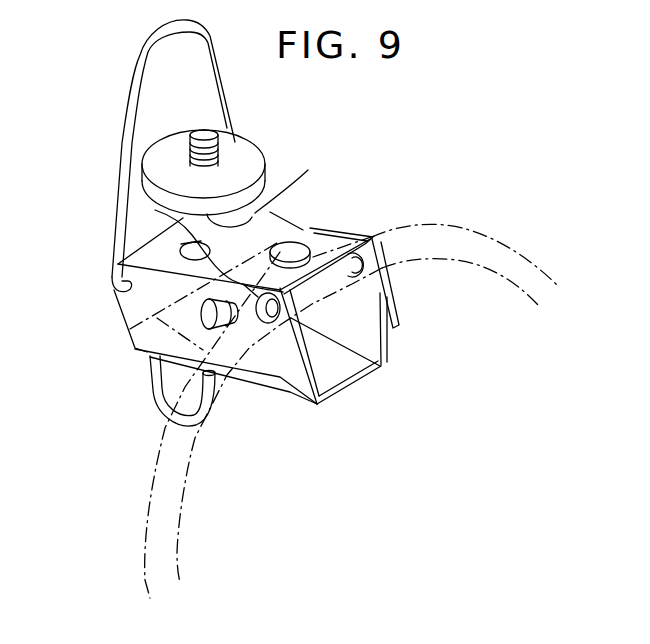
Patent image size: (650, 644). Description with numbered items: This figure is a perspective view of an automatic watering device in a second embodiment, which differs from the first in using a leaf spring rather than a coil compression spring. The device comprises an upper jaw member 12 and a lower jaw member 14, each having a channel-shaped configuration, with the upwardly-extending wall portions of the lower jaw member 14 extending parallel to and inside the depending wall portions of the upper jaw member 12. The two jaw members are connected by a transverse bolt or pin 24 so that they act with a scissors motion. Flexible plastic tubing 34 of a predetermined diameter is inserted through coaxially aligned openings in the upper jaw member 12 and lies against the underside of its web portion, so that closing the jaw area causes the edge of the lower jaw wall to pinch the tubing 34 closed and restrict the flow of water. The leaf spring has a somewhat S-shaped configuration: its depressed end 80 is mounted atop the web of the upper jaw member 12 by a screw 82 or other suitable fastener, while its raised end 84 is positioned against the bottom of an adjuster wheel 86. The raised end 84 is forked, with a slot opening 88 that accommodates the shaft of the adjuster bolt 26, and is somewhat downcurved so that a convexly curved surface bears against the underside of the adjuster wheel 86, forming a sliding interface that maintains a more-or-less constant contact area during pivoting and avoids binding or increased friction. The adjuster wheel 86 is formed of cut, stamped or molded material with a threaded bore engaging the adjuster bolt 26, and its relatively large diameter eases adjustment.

The upper jaw member 12 is at (126, 340).
The lower jaw member 14 is at (289, 395).
The transverse bolt or pin 24 is at (200, 316).
The adjuster bolt 26 is at (208, 134).
The flexible plastic tubing 34 is at (463, 229).
The depressed end 80 is at (319, 243).
The screw 82 is at (297, 238).
The raised end 84 is at (153, 208).
The adjuster wheel 86 is at (150, 152).
The slot opening 88 is at (293, 240).